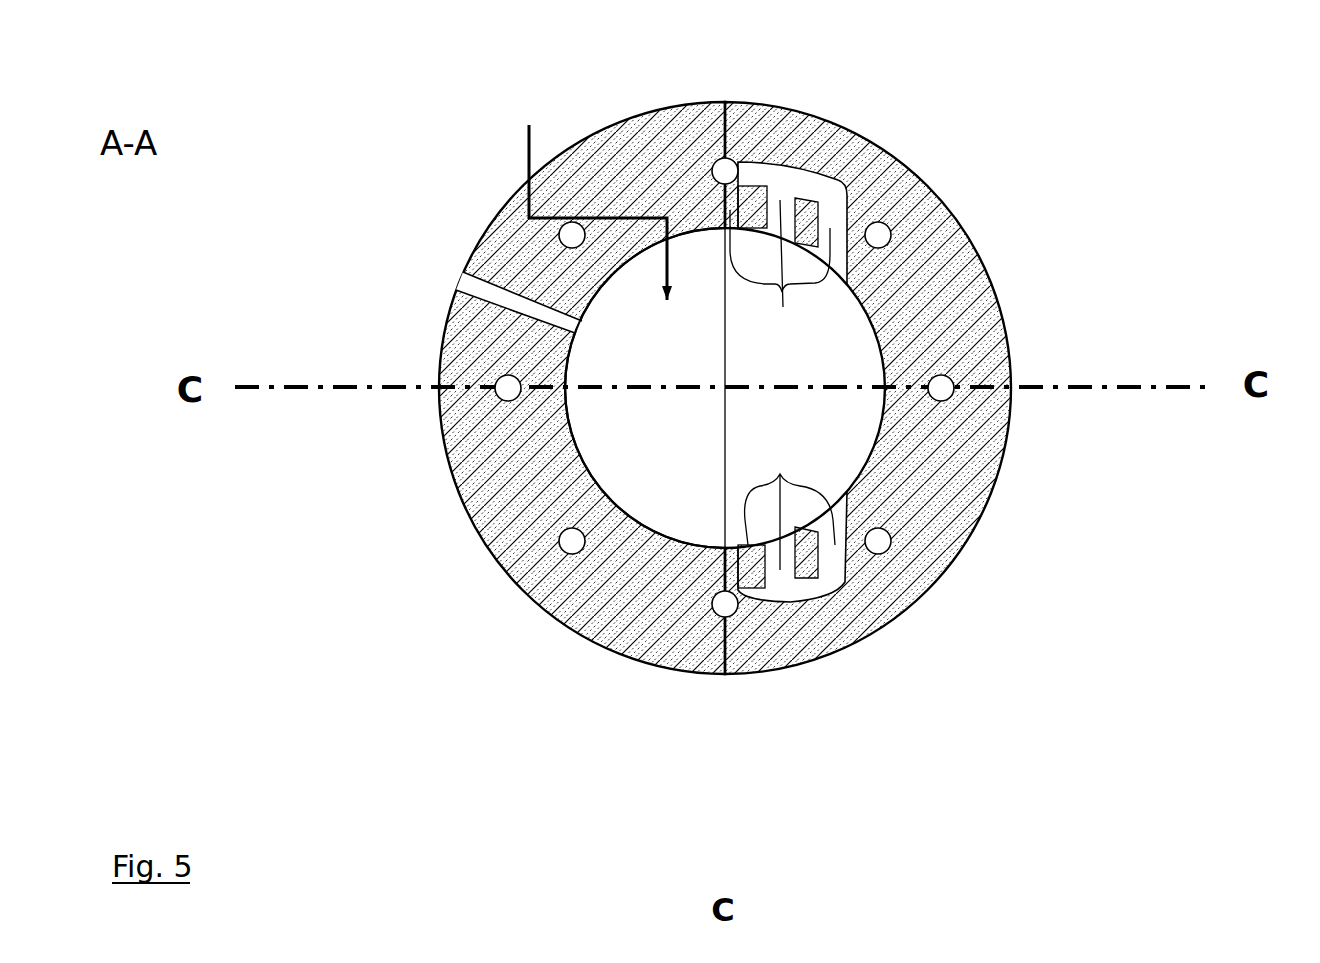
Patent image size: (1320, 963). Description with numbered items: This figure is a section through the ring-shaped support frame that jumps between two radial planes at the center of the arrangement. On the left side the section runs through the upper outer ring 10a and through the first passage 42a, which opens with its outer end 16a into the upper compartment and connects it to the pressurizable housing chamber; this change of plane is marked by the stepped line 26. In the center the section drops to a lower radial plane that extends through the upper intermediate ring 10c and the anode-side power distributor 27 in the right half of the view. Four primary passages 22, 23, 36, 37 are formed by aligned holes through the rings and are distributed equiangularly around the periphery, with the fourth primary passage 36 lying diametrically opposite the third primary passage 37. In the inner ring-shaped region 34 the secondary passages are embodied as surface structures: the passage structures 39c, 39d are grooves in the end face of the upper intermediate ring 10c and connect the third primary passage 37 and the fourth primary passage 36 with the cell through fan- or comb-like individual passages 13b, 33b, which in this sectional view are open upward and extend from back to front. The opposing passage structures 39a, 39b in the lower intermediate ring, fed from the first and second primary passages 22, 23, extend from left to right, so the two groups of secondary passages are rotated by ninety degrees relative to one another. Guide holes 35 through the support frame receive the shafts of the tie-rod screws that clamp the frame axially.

The upper outer ring 10a is at (476, 226).
The upper intermediate ring 10c is at (1014, 358).
The secondary passage 13b is at (1007, 354).
The outer end of first passage 16a is at (580, 327).
The first primary passage 22 is at (497, 400).
The second primary passage 23 is at (950, 397).
The metal plate 26 is at (584, 196).
The anode-side power distributor 27 is at (882, 221).
The secondary passage 33b is at (790, 501).
The inner ring-shaped region 34 is at (958, 476).
The guide hole 35 is at (1007, 354).
The fourth primary passage 36 is at (730, 608).
The third primary passage 37 is at (732, 164).
The passage structure 39a is at (510, 488).
The passage structure 39b is at (950, 480).
The passage structure 39c is at (812, 168).
The passage structure 39d is at (842, 597).
The first passage 42a is at (446, 332).